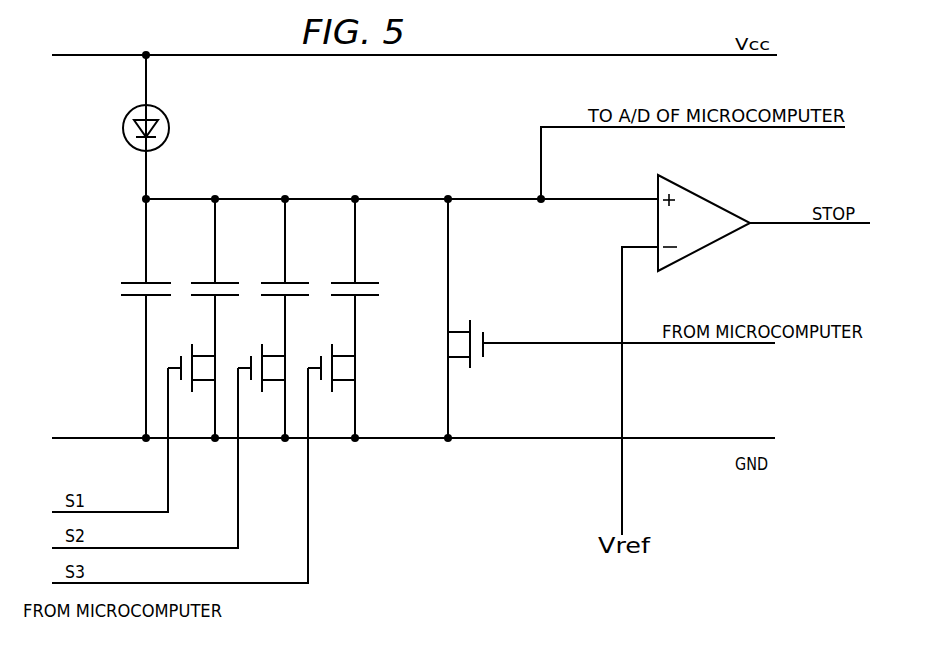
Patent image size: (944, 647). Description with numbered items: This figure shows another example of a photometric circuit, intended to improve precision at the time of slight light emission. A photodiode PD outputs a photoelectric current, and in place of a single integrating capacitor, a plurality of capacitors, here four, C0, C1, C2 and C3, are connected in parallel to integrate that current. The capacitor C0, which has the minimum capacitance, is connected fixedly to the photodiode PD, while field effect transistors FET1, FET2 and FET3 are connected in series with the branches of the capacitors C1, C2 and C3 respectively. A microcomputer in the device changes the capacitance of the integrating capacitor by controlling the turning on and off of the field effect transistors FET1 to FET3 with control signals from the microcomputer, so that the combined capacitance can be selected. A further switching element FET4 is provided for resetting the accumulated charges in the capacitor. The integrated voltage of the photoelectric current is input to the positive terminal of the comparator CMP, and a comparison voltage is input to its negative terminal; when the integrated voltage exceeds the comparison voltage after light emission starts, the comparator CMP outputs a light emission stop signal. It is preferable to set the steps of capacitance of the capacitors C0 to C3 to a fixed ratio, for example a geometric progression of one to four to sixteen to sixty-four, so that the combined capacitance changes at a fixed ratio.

The photodiode PD is at (125, 127).
The capacitor C0 is at (139, 318).
The capacitor C1 is at (208, 318).
The capacitor C2 is at (278, 318).
The capacitor C3 is at (348, 318).
The field effect transistor FET1 is at (186, 357).
The field effect transistor FET2 is at (256, 357).
The field effect transistor FET3 is at (326, 357).
The switching element FET4 is at (475, 318).
The comparator CMP is at (704, 223).